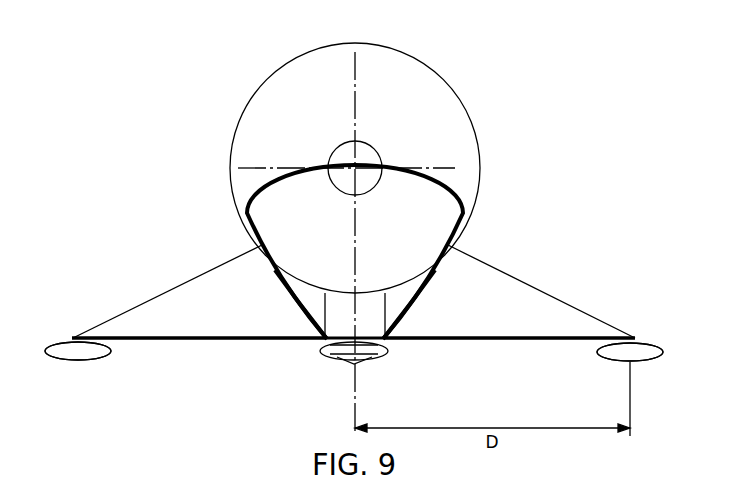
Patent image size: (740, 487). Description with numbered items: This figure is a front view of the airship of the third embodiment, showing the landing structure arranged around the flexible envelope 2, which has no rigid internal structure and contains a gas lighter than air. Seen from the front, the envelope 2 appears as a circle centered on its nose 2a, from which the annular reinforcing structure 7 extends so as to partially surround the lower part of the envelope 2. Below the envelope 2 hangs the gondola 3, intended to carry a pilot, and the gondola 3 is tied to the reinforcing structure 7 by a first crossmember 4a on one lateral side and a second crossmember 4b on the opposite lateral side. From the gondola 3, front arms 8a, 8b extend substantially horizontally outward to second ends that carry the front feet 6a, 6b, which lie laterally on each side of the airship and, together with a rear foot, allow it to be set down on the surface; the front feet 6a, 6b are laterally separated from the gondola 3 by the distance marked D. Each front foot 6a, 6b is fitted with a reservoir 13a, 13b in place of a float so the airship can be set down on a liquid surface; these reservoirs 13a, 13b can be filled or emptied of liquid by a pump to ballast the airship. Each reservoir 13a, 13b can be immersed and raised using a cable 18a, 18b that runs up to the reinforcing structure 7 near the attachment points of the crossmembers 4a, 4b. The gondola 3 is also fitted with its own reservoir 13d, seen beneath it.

The flexible envelope 2 is at (417, 80).
The nose 2a is at (350, 157).
The reinforcing structure 7 is at (445, 185).
The first crossmember 4a is at (430, 280).
The second crossmember 4b is at (277, 283).
The gondola 3 is at (333, 303).
The front arm 8a is at (520, 342).
The front arm 8b is at (193, 340).
The cable 18a is at (533, 288).
The cable 18b is at (177, 285).
The reservoir 13a is at (618, 357).
The reservoir 13b is at (90, 355).
The reservoir 13d is at (365, 363).
The front foot 6a is at (647, 332).
The front foot 6b is at (62, 332).